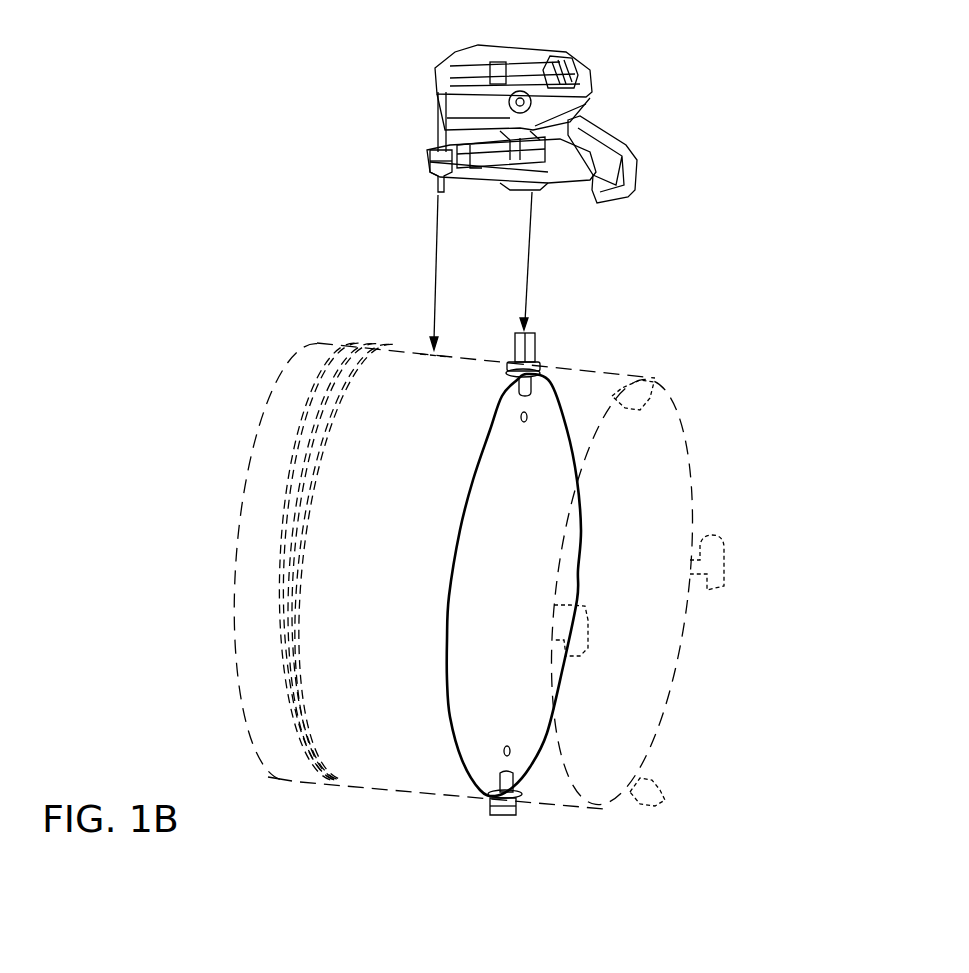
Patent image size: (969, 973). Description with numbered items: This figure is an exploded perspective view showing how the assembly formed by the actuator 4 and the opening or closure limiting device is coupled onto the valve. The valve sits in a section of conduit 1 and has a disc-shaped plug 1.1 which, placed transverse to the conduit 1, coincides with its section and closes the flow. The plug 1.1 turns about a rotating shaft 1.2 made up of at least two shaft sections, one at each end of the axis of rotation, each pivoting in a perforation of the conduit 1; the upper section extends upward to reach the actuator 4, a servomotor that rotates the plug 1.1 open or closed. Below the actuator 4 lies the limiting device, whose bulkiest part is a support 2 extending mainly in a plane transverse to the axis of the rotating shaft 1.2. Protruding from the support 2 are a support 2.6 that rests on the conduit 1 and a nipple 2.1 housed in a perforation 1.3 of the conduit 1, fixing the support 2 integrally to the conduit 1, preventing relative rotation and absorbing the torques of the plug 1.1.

The conduit 1 is at (620, 373).
The plug 1.1 is at (583, 540).
The rotating shaft 1.2 is at (537, 348).
The perforation 1.3 is at (432, 355).
The support 2 is at (596, 125).
The nipple 2.1 is at (438, 190).
The support 2.6 is at (627, 155).
The actuator 4 is at (494, 55).